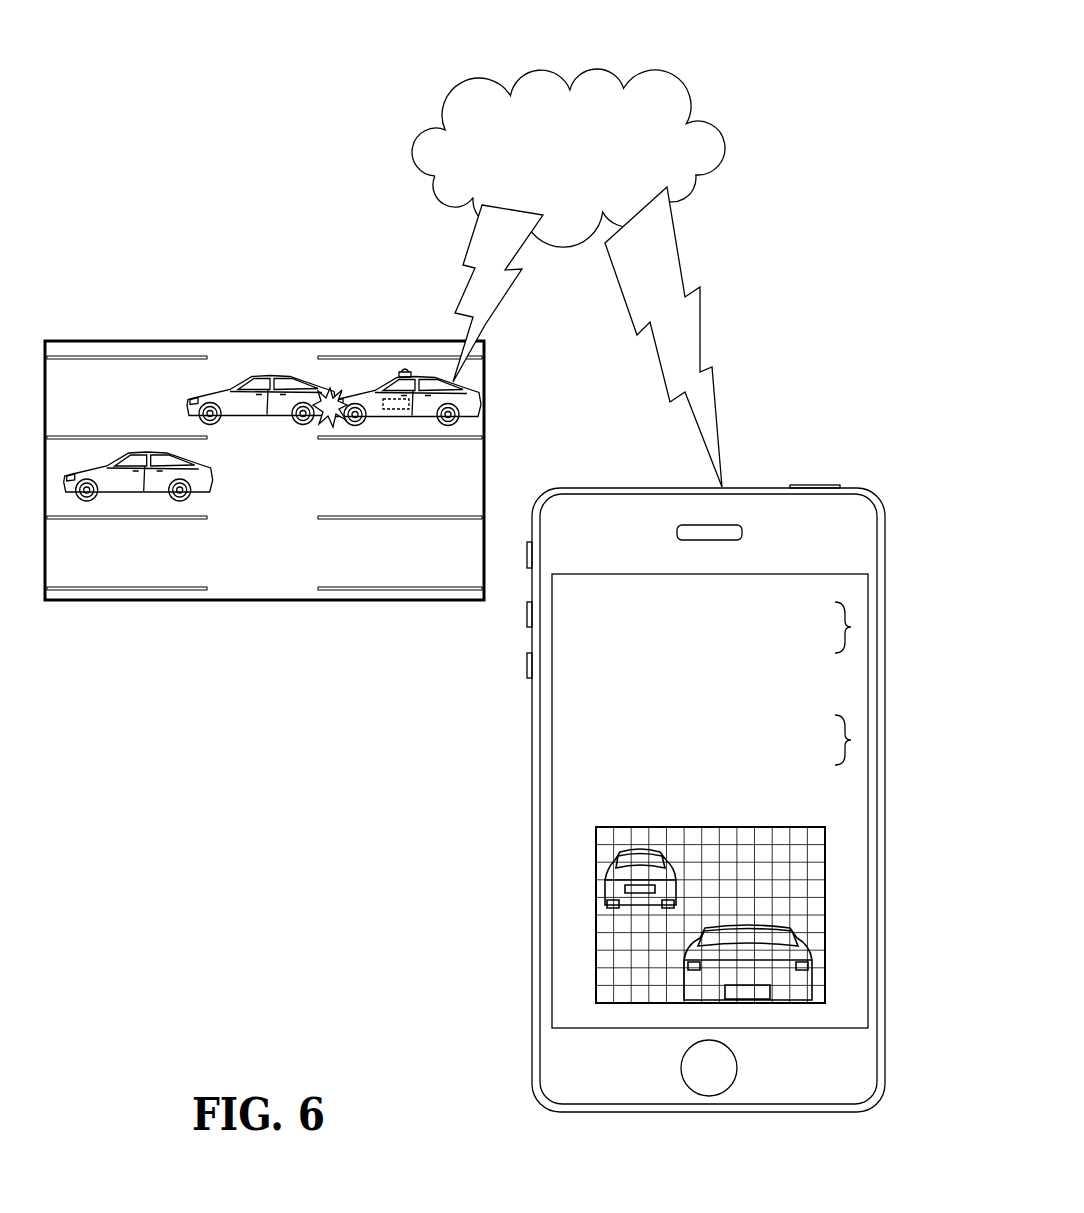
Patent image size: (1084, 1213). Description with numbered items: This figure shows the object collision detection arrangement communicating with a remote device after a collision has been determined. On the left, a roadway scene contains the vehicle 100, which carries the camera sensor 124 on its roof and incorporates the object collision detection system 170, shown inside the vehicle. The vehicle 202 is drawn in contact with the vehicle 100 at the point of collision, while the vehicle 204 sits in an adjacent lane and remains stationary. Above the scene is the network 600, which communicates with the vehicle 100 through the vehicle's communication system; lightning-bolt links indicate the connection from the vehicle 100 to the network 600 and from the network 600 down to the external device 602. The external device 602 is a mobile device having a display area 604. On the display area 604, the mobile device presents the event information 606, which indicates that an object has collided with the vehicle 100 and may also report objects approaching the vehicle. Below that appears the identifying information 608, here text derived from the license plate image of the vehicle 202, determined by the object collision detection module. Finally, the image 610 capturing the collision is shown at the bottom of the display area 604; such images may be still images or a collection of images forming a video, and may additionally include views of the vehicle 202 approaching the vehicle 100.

The vehicle 100 is at (439, 397).
The camera sensor 124 is at (407, 370).
The object collision detection system 170 is at (392, 412).
The vehicle 202 is at (273, 377).
The vehicle 204 is at (125, 493).
The network 600 is at (720, 112).
The external device 602 is at (688, 739).
The display area 604 is at (688, 801).
The event information 606 is at (847, 627).
The identifying information 608 is at (847, 740).
The image 610 is at (825, 890).